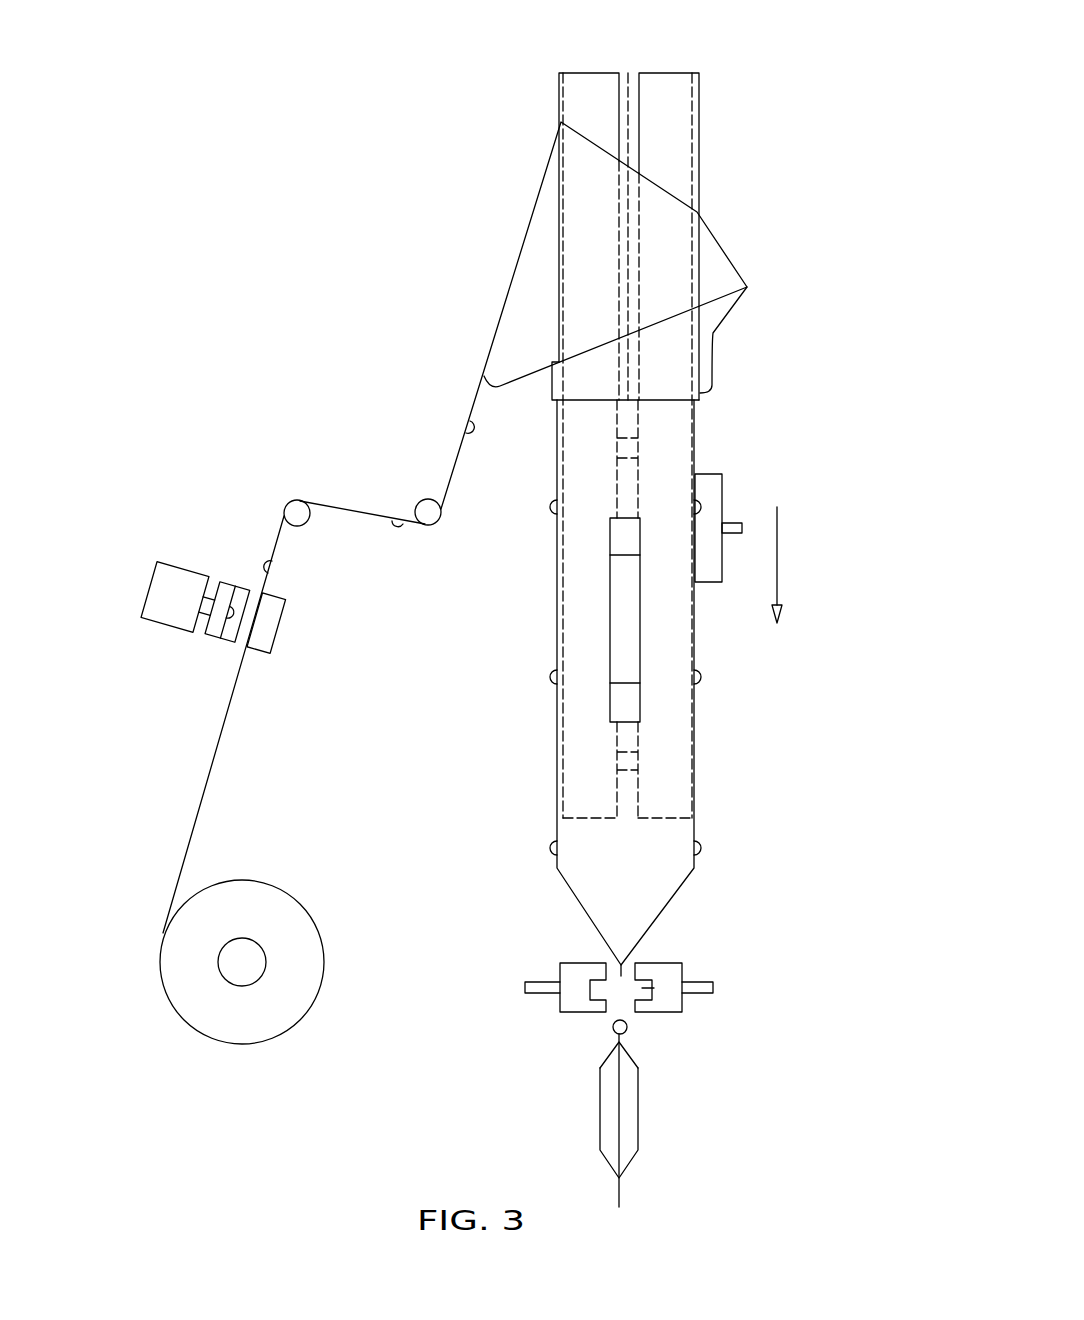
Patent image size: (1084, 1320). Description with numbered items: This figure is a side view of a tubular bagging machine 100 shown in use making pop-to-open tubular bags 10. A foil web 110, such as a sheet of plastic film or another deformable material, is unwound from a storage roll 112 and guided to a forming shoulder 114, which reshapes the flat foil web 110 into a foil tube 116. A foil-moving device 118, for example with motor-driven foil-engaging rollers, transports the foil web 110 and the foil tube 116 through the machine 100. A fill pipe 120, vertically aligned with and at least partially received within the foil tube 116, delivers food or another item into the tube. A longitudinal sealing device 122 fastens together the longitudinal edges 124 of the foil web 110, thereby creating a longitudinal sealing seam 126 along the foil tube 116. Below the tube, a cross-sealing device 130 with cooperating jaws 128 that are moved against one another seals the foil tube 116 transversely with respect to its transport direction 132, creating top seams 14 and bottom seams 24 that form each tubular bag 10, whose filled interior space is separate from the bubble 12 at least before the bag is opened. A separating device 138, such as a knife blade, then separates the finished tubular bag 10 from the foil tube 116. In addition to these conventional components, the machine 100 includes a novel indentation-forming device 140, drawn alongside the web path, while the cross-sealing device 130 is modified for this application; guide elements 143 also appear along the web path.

The tubular bagging machine 100 is at (760, 120).
The tubular bag 10 is at (613, 1138).
The bubble 12 is at (627, 1037).
The top seam 14 is at (618, 1043).
The bottom seam 24 is at (622, 970).
The foil web 110 is at (357, 505).
The storage roll 112 is at (270, 1010).
The forming shoulder 114 is at (393, 287).
The foil tube 116 is at (652, 870).
The foil-moving device 118 is at (613, 692).
The fill pipe 120 is at (578, 828).
The longitudinal sealing device 122 is at (710, 490).
The longitudinal edges 124 is at (693, 420).
The longitudinal sealing seam 126 is at (693, 635).
The cooperating jaws 128 is at (573, 1003).
The cross-sealing device 130 is at (708, 958).
The transport direction 132 is at (777, 552).
The separating device 138 is at (648, 992).
The indentation-forming device 140 is at (130, 567).
The guides 143 is at (274, 566).